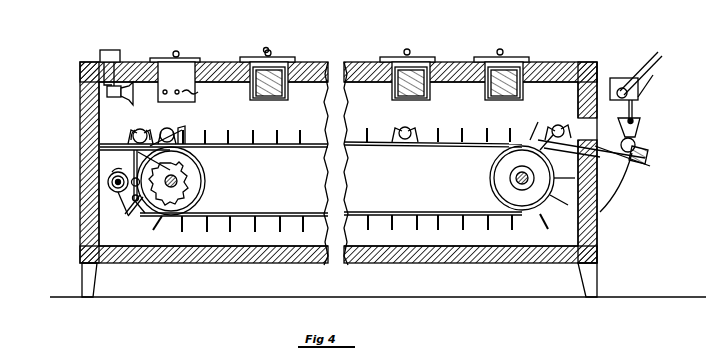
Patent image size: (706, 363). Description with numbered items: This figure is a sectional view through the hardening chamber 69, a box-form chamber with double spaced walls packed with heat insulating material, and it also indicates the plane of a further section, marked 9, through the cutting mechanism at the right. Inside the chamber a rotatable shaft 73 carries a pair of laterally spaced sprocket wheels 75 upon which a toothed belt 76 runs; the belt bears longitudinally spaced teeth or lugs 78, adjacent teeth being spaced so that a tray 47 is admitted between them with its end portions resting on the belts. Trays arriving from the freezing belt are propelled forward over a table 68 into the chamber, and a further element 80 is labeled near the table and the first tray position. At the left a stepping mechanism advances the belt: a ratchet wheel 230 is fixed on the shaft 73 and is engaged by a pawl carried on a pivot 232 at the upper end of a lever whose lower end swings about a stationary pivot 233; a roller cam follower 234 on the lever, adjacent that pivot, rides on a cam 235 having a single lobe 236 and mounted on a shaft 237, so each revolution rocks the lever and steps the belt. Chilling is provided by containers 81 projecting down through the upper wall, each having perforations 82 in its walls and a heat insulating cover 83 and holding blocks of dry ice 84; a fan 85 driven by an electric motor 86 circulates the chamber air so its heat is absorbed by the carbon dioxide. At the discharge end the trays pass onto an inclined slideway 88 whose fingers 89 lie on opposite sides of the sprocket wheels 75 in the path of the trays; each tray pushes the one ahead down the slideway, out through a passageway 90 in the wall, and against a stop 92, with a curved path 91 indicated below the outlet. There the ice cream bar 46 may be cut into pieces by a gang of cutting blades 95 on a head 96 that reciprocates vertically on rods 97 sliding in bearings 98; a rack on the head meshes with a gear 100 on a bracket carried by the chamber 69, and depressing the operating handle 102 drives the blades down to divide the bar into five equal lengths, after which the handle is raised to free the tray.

The fan 85 is at (140, 66).
The hardening chamber 69 is at (448, 62).
The electric motor 86 is at (112, 90).
The containers 81 is at (185, 72).
The perforations 82 is at (268, 104).
The heat insulating covers 83 is at (266, 49).
The blocks of dry ice 84 is at (286, 99).
The toothed belt 76 is at (376, 146).
The teeth or lugs 78 is at (206, 134).
The sprocket wheels 75 is at (214, 194).
The shaft 73 is at (186, 176).
The ratchet wheel 230 is at (178, 181).
The cam 235 is at (108, 182).
The lobe 236 is at (112, 174).
The pivot 232 is at (135, 175).
The shaft 237 is at (131, 186).
The cam follower 234 is at (124, 210).
The pivot 233 is at (131, 213).
The table 68 is at (120, 141).
The article 80 is at (131, 136).
The bar 46 is at (166, 130).
The tray 47 is at (183, 128).
The fingers 89 is at (553, 127).
The passageway 90 is at (579, 133).
The inclined slideway 88 is at (606, 144).
The gear 100 is at (620, 78).
The operating handle 102 is at (652, 62).
The bearings 98 is at (640, 97).
The rods 97 is at (633, 112).
The head 96 is at (633, 120).
The cutting blades 95 is at (641, 125).
The discharge path 91 is at (617, 175).
The stop 92 is at (648, 154).
The section line 9 is at (629, 124).